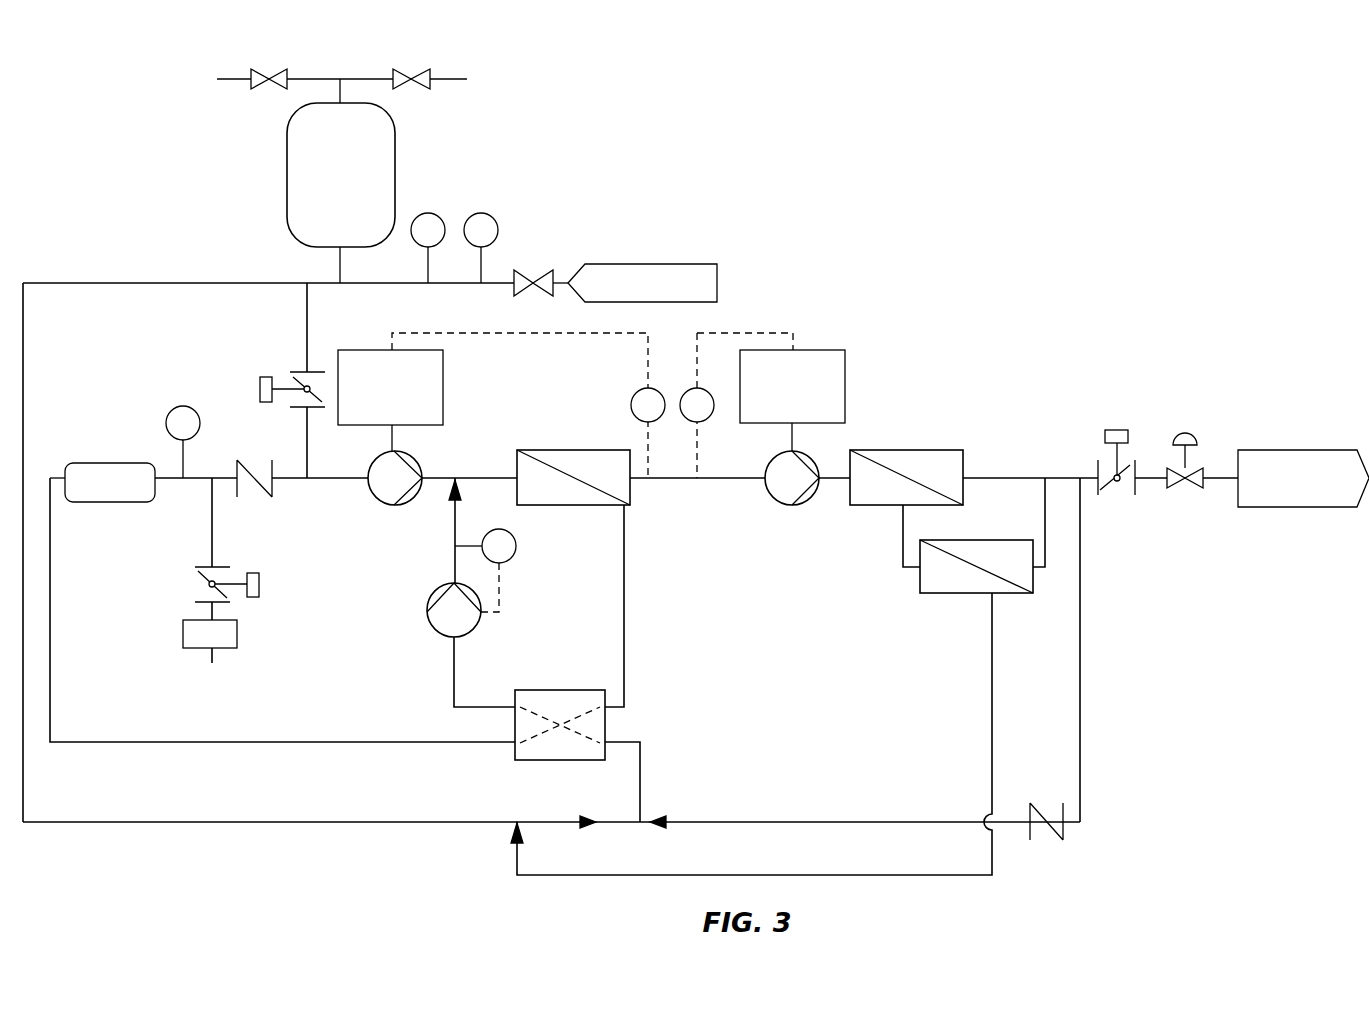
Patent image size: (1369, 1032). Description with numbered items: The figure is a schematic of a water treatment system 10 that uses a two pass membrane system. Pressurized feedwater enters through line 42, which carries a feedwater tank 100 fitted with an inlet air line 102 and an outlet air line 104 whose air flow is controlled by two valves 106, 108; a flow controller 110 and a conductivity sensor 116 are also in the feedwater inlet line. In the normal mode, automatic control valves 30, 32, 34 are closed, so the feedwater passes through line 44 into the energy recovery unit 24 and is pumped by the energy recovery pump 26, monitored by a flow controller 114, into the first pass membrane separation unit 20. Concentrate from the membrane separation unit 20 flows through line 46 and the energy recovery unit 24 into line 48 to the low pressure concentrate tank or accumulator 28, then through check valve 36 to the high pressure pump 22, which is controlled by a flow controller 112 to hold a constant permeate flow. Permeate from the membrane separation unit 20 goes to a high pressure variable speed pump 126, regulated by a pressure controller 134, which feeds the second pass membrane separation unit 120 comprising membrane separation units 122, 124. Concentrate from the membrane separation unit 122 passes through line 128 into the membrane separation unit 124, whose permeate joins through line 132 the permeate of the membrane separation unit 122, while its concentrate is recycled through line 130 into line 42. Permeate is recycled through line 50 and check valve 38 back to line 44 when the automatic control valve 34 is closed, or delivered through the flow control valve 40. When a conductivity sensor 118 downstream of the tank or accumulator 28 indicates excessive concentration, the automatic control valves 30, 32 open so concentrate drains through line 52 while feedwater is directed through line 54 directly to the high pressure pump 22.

The water treatment system 10 is at (875, 128).
The membrane separation unit 20 is at (571, 507).
The high pressure pump 22 is at (414, 464).
The energy recovery unit 24 is at (560, 762).
The energy recovery pump 26 is at (436, 630).
The low pressure concentrate tank or accumulator 28 is at (116, 463).
The automatic control valve 30 is at (258, 388).
The automatic control valve 32 is at (261, 584).
The automatic control valve 34 is at (1123, 428).
The check valve 36 is at (256, 492).
The check valve 38 is at (1042, 843).
The flow control valve 40 is at (1197, 437).
The line 42 is at (181, 283).
The line 44 is at (642, 800).
The line 46 is at (622, 562).
The line 48 is at (322, 742).
The line 50 is at (1083, 630).
The line 52 is at (210, 547).
The line 54 is at (312, 320).
The feedwater tank 100 is at (396, 160).
The inlet air line 102 is at (226, 78).
The outlet air line 104 is at (449, 78).
The valve 106 is at (277, 77).
The valve 108 is at (403, 77).
The flow controller 110 is at (434, 214).
The flow controller 112 is at (641, 392).
The flow controller 114 is at (516, 550).
The conductivity sensor 116 is at (493, 216).
The conductivity sensor 118 is at (202, 424).
The second pass membrane separation unit 120 is at (862, 574).
The membrane separation unit 122 is at (937, 450).
The membrane separation unit 124 is at (989, 541).
The high pressure variable speed pump 126 is at (782, 506).
The line 128 is at (900, 540).
The line 130 is at (990, 668).
The line 132 is at (1046, 518).
The pressure controller 134 is at (705, 420).